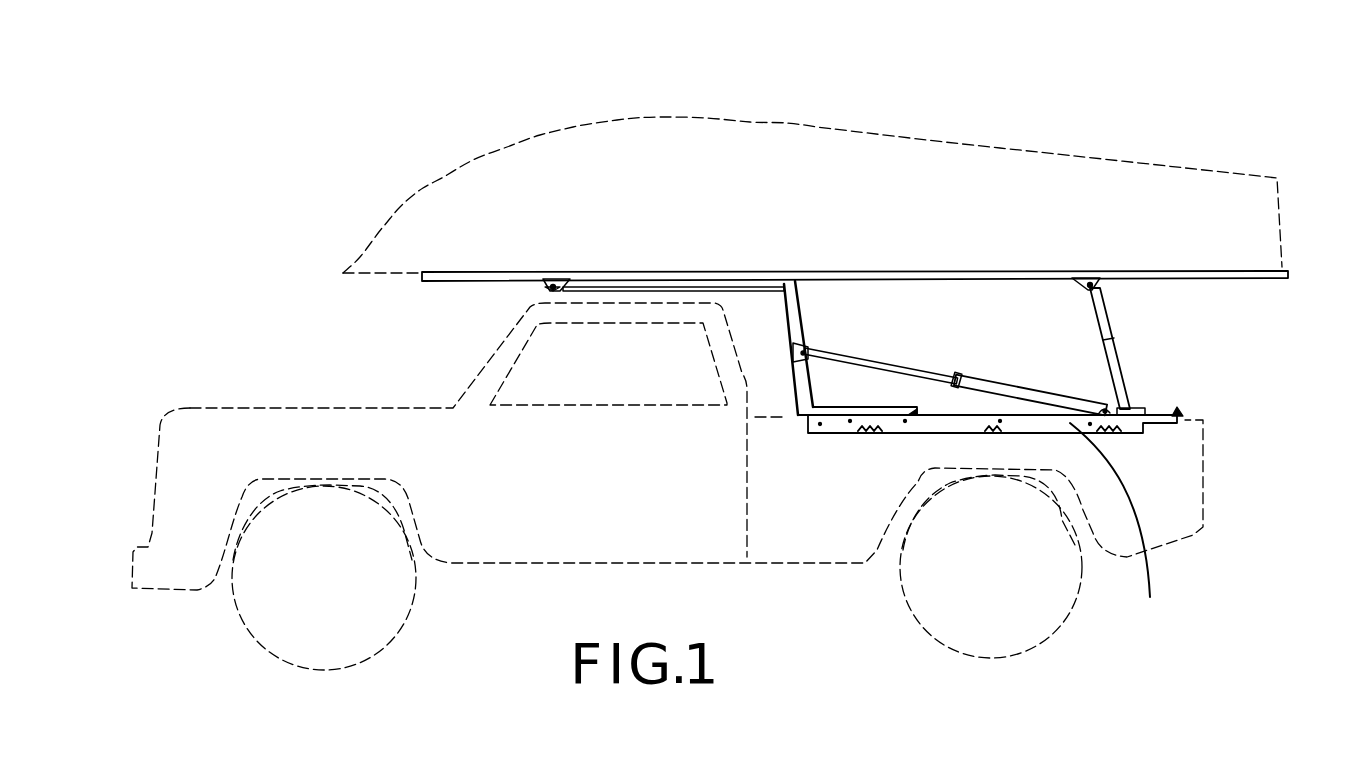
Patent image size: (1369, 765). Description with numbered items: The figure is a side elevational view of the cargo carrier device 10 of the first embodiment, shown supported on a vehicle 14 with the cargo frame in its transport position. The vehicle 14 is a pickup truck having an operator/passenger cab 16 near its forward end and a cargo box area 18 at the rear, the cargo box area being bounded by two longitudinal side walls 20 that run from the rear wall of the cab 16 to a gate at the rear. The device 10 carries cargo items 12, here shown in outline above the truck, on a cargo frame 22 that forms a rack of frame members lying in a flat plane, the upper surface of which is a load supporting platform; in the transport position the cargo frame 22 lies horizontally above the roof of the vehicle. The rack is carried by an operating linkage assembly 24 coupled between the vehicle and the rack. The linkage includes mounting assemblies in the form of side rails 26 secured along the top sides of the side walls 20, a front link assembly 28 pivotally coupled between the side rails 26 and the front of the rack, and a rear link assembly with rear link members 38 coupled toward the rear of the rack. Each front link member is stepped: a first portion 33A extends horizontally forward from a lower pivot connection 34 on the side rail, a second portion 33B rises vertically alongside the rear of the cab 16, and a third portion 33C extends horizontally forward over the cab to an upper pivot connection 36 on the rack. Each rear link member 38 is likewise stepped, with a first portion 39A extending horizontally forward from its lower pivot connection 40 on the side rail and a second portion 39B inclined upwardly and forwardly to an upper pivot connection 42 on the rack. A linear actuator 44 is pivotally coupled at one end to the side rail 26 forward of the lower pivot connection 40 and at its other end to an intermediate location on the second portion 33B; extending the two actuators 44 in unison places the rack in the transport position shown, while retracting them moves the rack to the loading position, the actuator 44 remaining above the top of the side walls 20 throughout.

The cargo carrier device 10 is at (1252, 303).
The cargo items 12 is at (818, 122).
The vehicle 14 is at (140, 433).
The operator/passenger cab 16 is at (497, 355).
The cargo box area 18 is at (828, 522).
The side walls 20 is at (1187, 492).
The cargo frame 22 is at (458, 282).
The operating linkage assembly 24 is at (1143, 353).
The side rails 26 is at (1117, 533).
The front link assembly 28 is at (541, 288).
The first portion 33A is at (847, 417).
The second portion 33B is at (795, 327).
The third portion 33C is at (644, 284).
The lower pivot connections 34 is at (912, 415).
The upper pivot connections 36 is at (535, 276).
The rear link members 38 is at (1094, 322).
The first portion 39A is at (1150, 407).
The second portion 39B is at (1108, 353).
The lower pivot connections 40 is at (1183, 408).
The upper pivot connections 42 is at (1086, 288).
The linear actuators 44 is at (963, 373).